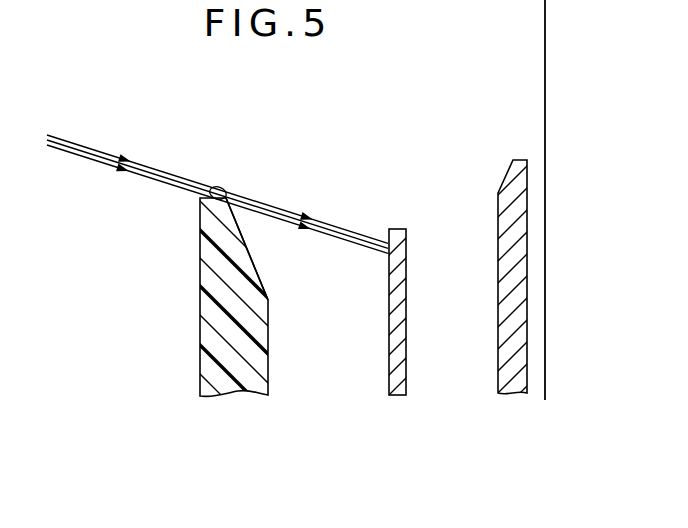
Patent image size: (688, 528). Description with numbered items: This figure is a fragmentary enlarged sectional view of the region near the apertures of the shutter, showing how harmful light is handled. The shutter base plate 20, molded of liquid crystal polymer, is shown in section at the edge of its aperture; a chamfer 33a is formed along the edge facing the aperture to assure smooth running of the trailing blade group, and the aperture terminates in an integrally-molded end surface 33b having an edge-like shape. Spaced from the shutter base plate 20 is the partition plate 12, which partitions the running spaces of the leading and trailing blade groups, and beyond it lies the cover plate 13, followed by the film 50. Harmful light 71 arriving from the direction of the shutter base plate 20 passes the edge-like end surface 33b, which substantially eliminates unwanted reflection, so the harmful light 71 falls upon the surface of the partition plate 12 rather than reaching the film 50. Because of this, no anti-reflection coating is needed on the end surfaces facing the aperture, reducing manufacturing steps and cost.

The harmful light 71 is at (43, 130).
The end surface 33b is at (216, 200).
The chamfer 33a is at (258, 271).
The shutter base plate 20 is at (260, 362).
The partition plate 12 is at (392, 368).
The cover plate 13 is at (507, 303).
The film 50 is at (545, 272).